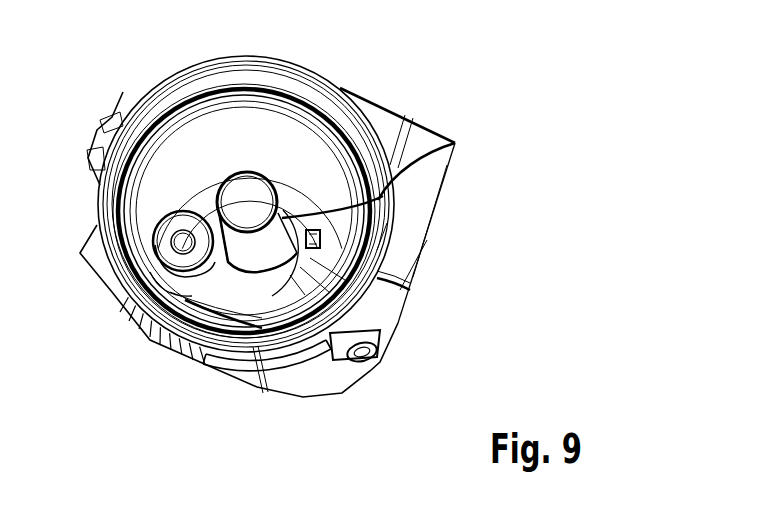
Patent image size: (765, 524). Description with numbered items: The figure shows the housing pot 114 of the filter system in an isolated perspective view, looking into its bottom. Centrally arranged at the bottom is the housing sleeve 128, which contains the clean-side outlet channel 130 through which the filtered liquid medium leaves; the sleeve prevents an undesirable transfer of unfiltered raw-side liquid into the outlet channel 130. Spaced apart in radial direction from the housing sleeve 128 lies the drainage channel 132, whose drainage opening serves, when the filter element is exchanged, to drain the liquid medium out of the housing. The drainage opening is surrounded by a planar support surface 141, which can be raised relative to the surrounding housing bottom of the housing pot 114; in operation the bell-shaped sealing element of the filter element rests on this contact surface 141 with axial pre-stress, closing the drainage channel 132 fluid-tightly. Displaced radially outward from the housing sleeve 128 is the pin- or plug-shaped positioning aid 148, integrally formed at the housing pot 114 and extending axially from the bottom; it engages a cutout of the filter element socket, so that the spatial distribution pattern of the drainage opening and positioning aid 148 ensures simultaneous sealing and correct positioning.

The housing pot 114 is at (396, 94).
The housing sleeve 128 is at (455, 143).
The clean-side outlet channel 130 is at (243, 192).
The drainage channel 132 is at (178, 242).
The support surface 141 is at (185, 258).
The positioning aid 148 is at (313, 240).